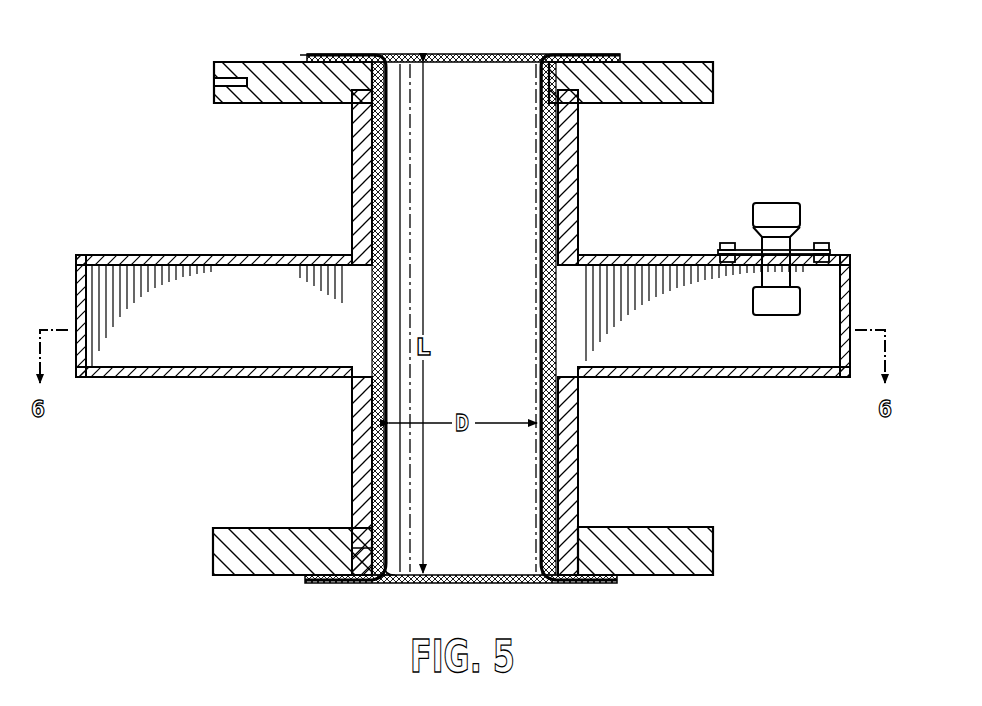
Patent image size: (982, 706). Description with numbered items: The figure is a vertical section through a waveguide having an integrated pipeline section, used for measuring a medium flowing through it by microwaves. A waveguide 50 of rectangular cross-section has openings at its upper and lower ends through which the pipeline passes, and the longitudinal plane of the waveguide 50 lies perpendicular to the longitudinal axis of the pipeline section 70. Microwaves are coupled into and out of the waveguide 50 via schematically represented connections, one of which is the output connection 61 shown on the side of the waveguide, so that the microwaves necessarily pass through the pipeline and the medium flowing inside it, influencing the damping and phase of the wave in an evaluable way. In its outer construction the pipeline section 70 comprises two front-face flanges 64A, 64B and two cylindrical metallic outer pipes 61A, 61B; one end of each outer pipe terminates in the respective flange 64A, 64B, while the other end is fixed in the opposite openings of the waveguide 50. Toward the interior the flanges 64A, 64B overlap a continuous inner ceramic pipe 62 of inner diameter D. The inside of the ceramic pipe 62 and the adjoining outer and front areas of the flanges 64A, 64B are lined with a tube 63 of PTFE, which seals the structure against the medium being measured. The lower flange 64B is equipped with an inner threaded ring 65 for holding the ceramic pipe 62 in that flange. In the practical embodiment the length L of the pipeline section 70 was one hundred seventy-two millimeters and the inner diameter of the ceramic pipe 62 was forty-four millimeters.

The waveguide 50 is at (264, 382).
The output connection 61 is at (800, 212).
The metallic outer pipe 61A is at (568, 172).
The metallic outer pipe 61B is at (568, 448).
The inner ceramic pipe 62 is at (378, 156).
The PTFE tube 63 is at (385, 211).
The front-face flange 64A is at (700, 80).
The front-face flange 64B is at (697, 550).
The inner threaded ring 65 is at (350, 550).
The pipeline section 70 is at (513, 52).